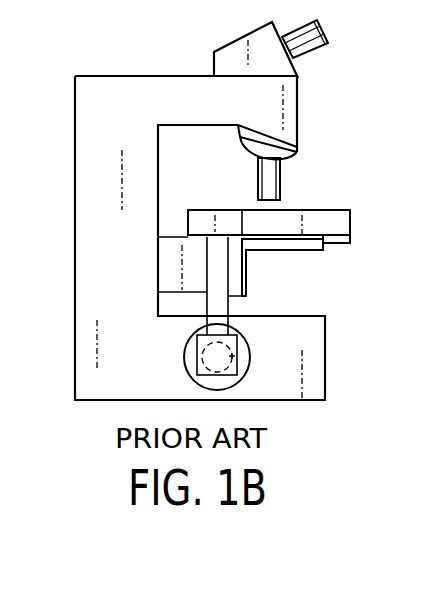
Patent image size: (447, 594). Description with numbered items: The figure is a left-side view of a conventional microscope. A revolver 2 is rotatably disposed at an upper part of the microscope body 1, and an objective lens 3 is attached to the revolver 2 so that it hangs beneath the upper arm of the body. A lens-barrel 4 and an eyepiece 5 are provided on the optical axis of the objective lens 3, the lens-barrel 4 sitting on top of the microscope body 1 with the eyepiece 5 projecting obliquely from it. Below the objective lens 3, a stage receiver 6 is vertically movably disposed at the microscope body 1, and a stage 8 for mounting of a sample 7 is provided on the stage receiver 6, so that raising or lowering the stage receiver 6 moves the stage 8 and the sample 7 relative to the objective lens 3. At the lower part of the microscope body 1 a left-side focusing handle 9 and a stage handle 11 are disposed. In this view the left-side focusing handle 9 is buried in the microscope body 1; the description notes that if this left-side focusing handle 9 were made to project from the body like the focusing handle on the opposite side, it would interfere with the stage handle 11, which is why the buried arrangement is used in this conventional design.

The microscope body 1 is at (78, 231).
The revolver 2 is at (252, 148).
The objective lens 3 is at (262, 180).
The lens-barrel 4 is at (214, 62).
The eyepiece 5 is at (312, 50).
The stage receiver 6 is at (282, 250).
The sample 7 is at (268, 210).
The stage 8 is at (335, 243).
The left-side focusing handle 9 is at (197, 354).
The stage handle 11 is at (238, 356).